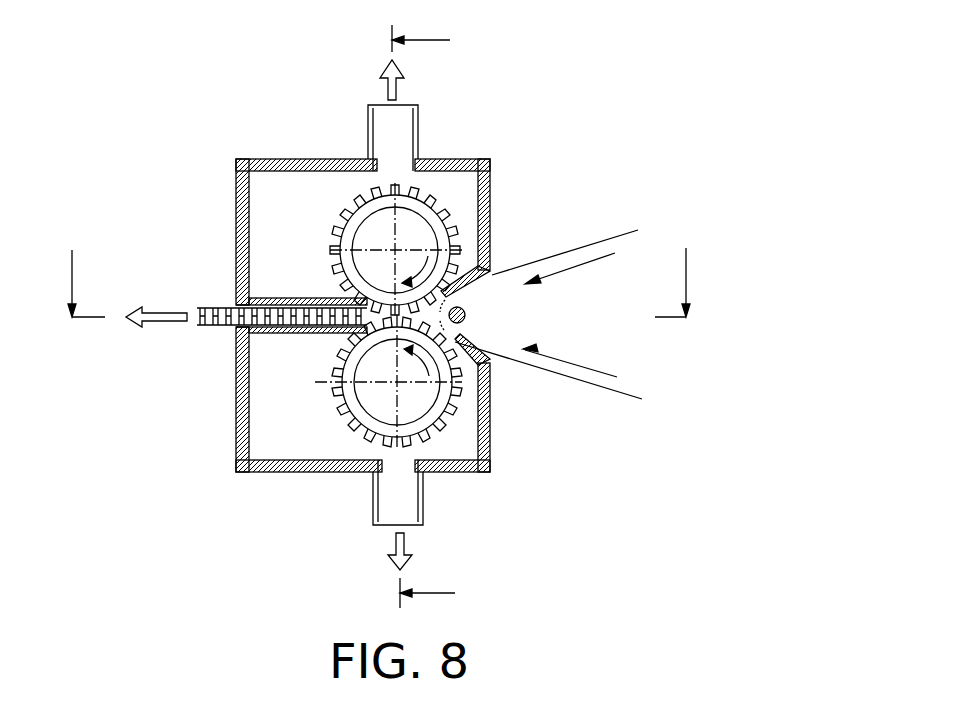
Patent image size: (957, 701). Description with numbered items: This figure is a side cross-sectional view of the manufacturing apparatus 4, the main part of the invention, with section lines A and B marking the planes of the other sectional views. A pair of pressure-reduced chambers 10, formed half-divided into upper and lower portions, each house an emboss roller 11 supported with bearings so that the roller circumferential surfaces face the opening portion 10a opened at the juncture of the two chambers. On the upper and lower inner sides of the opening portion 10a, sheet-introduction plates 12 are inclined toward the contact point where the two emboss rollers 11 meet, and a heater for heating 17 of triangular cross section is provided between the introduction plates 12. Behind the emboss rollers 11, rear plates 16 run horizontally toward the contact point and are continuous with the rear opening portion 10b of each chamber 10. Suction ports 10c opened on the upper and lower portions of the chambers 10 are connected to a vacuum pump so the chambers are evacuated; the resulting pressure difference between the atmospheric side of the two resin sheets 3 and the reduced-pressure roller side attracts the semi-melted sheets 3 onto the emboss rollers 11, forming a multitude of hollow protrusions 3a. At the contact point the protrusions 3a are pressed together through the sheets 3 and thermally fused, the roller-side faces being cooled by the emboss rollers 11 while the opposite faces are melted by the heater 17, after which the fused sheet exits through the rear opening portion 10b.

The resin sheet 3 is at (553, 256).
The hollow protrusion 3a is at (207, 307).
The manufacturing apparatus 4 is at (609, 95).
The pressure-reduced chamber 10 is at (283, 158).
The opening portion 10a is at (492, 275).
The rear opening portion 10b is at (232, 298).
The suction port 10c is at (418, 118).
The emboss roller 11 is at (372, 237).
The sheet-introduction plate 12 is at (493, 270).
The rear plate 16 is at (290, 298).
The heater for heating 17 is at (468, 316).
The section line A- A is at (443, 315).
The section line B- B is at (380, 261).